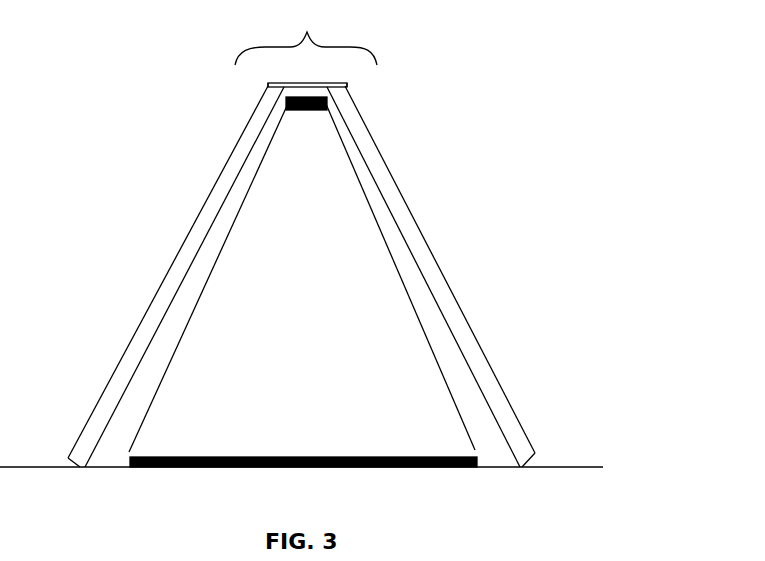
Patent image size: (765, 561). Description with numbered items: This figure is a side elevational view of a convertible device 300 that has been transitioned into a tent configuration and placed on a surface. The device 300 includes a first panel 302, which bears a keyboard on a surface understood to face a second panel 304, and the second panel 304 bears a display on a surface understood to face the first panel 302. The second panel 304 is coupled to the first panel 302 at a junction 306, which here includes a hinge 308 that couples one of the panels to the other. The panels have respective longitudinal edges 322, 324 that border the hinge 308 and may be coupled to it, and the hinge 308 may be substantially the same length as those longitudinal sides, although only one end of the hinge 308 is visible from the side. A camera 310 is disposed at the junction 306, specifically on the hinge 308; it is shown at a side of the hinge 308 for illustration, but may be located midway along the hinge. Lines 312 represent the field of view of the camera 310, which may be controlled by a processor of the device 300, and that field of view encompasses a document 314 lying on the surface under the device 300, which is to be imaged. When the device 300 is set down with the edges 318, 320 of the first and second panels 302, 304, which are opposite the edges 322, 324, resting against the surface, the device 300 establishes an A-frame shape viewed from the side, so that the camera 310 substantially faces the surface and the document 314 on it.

The convertible device 300 is at (513, 88).
The first panel 302 is at (382, 158).
The second panel 304 is at (228, 161).
The junction 306 is at (306, 40).
The hinge 308 is at (290, 83).
The camera 310 is at (300, 112).
The lines 312 is at (235, 222).
The document 314 is at (406, 456).
The edge 318 is at (535, 462).
The edge 320 is at (70, 463).
The longitudinal edge 322 is at (350, 87).
The longitudinal edge 324 is at (262, 87).